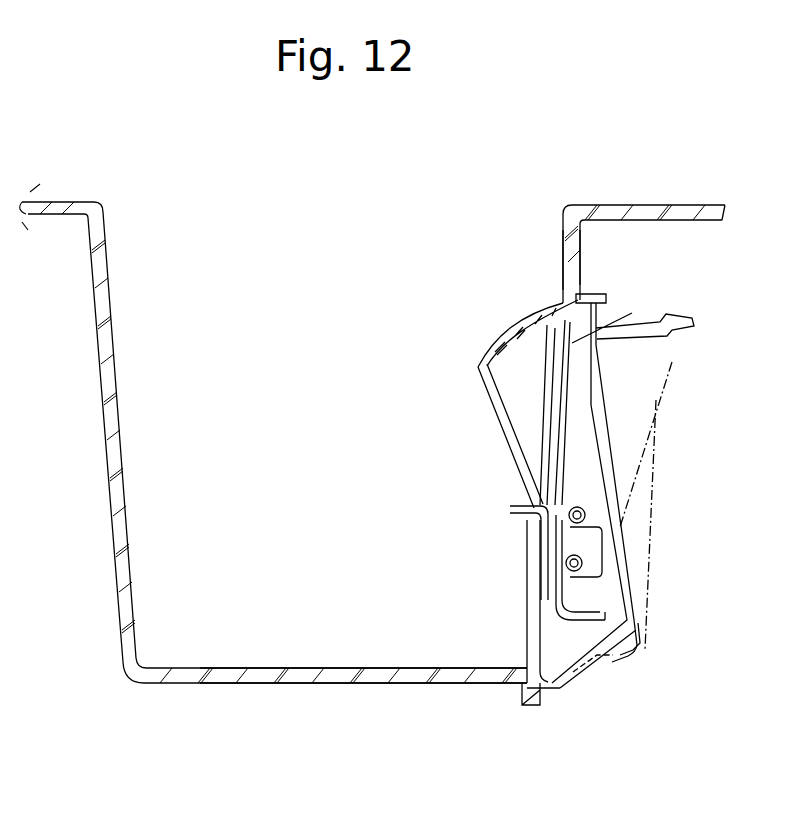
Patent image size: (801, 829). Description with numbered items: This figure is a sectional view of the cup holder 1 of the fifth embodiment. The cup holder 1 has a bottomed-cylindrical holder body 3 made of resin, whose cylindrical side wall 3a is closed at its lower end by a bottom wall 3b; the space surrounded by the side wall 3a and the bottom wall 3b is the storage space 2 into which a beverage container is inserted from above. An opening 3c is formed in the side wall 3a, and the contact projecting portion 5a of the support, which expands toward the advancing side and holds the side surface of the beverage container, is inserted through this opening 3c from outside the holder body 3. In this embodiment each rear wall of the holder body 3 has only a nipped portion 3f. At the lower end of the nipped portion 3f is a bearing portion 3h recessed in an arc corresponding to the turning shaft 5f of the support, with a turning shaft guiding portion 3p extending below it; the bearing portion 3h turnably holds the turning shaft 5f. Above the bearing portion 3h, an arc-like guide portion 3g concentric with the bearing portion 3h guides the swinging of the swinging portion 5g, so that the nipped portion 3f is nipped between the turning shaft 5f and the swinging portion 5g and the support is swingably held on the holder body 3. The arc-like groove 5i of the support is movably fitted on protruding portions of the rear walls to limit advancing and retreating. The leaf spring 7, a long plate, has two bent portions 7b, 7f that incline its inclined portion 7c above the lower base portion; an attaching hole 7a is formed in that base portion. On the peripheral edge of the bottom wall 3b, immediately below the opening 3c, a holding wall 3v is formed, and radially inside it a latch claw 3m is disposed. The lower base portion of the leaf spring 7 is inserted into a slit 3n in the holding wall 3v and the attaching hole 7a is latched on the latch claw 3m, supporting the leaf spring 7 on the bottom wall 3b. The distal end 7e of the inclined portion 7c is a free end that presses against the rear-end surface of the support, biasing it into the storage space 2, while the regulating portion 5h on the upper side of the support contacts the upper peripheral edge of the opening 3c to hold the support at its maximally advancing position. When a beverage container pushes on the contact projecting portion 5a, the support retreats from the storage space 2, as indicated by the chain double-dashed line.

The cup holder 1 is at (666, 133).
The storage space 2 is at (337, 258).
The holder body 3 is at (73, 200).
The side wall 3a is at (582, 262).
The bottom wall 3b is at (337, 685).
The opening 3c is at (515, 512).
The nipped portion 3f is at (627, 531).
The guide portion 3g is at (607, 527).
The bearing portion 3h is at (605, 567).
The latch claw 3m is at (487, 689).
The slit 3n is at (545, 700).
The turning shaft guiding portion 3p is at (625, 592).
The holding wall 3v is at (538, 703).
The contact projecting portion 5a is at (480, 368).
The turning shaft 5f is at (595, 575).
The swinging portion 5g is at (590, 512).
The regulating portion 5h is at (575, 290).
The arc-like groove 5i is at (643, 316).
The leaf spring 7 is at (627, 555).
The attaching hole 7a is at (510, 688).
The bent portion 7b is at (552, 686).
The inclined portion 7c is at (613, 465).
The distal end 7e is at (605, 356).
The bent portion 7f is at (641, 625).